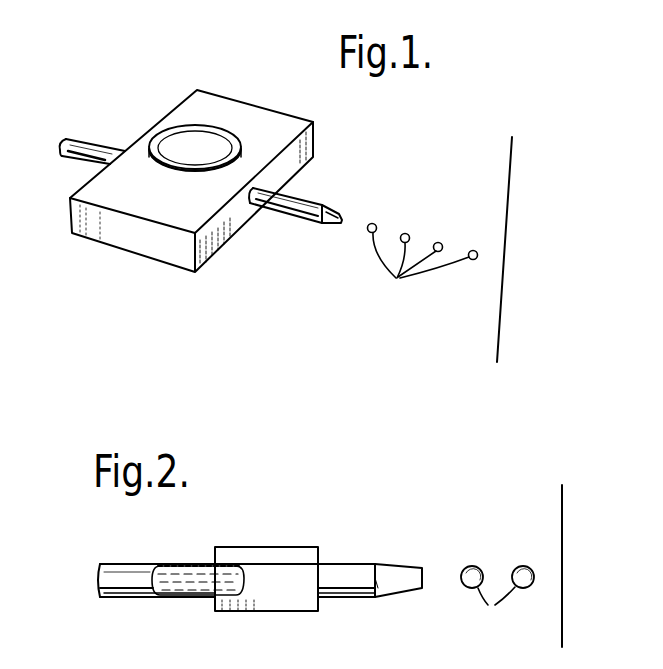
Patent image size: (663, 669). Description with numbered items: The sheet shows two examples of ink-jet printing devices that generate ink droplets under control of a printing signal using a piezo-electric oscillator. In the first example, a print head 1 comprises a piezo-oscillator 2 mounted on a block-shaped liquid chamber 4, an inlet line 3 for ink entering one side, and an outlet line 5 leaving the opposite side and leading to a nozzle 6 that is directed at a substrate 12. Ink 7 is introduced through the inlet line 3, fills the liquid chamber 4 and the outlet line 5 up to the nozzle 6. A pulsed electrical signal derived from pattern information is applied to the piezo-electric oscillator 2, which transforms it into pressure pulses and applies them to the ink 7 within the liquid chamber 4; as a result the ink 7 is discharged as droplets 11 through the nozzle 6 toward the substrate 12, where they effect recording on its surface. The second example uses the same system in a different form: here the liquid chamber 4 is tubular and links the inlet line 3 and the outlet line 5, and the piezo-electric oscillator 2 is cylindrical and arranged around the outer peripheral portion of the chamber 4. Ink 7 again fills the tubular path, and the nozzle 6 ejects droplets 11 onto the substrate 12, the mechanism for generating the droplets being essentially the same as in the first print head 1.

In FIG. 1, the print head 1 is at (187, 82).
In FIG. 2, the print head 1 is at (309, 507).
In FIG. 1, the piezo-electric oscillator 2 is at (205, 126).
In FIG. 2, the piezo-electric oscillator 2 is at (252, 553).
In FIG. 1, the inlet line 3 is at (106, 141).
In FIG. 2, the inlet line 3 is at (137, 568).
In FIG. 1, the liquid chamber 4 is at (152, 247).
In FIG. 2, the liquid chamber 4 is at (298, 583).
In FIG. 1, the outlet line 5 is at (318, 197).
In FIG. 2, the outlet line 5 is at (352, 562).
In FIG. 1, the nozzle 6 is at (350, 218).
In FIG. 2, the nozzle 6 is at (423, 573).
In FIG. 1, the ink 7 is at (82, 158).
In FIG. 2, the ink 7 is at (185, 588).
In FIG. 1, the droplets 11 is at (400, 284).
In FIG. 2, the droplets 11 is at (504, 608).
In FIG. 1, the substrate 12 is at (500, 337).
In FIG. 2, the substrate 12 is at (562, 633).